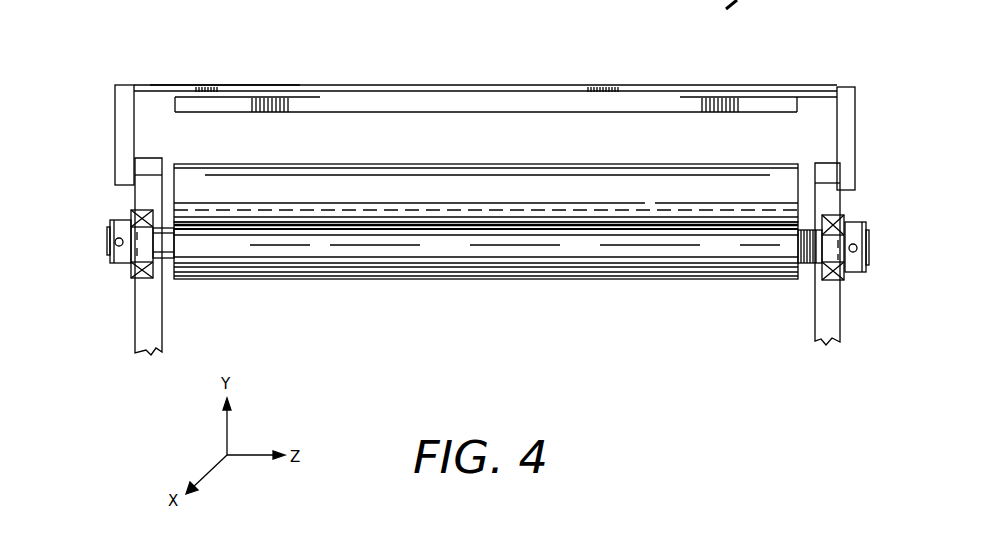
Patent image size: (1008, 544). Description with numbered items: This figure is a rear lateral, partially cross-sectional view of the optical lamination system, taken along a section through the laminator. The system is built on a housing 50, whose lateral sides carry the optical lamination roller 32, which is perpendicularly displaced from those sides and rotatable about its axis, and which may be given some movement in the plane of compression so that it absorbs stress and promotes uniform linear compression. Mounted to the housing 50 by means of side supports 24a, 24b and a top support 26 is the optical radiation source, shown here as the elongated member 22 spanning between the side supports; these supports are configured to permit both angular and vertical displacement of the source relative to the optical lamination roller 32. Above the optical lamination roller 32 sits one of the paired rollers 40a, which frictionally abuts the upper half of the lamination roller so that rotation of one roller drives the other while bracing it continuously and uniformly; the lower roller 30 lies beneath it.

The top rail 22 is at (438, 102).
The side support 24a is at (128, 118).
The side support 24b is at (848, 117).
The top support 26 is at (170, 83).
The lower roller 30 is at (590, 282).
The optical lamination roller 32 is at (498, 253).
The paired roller 40a is at (577, 188).
The housing 50 is at (148, 324).